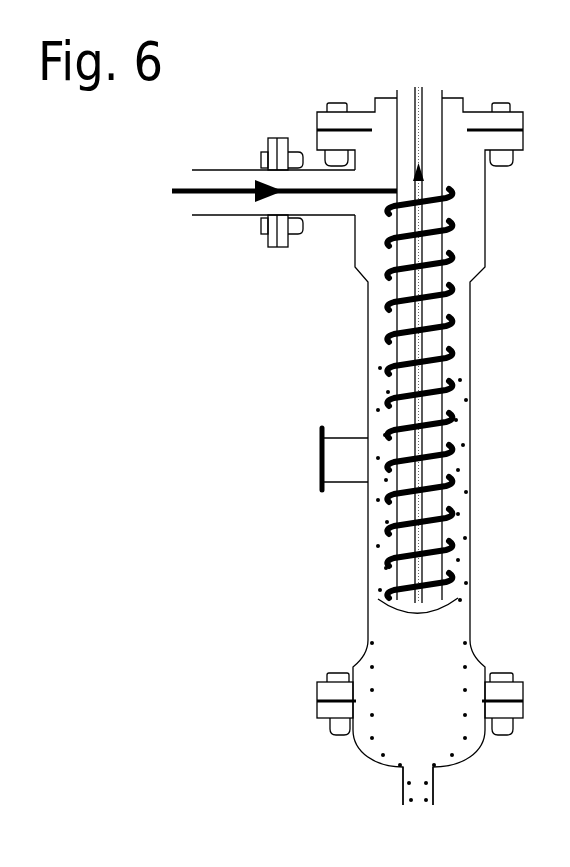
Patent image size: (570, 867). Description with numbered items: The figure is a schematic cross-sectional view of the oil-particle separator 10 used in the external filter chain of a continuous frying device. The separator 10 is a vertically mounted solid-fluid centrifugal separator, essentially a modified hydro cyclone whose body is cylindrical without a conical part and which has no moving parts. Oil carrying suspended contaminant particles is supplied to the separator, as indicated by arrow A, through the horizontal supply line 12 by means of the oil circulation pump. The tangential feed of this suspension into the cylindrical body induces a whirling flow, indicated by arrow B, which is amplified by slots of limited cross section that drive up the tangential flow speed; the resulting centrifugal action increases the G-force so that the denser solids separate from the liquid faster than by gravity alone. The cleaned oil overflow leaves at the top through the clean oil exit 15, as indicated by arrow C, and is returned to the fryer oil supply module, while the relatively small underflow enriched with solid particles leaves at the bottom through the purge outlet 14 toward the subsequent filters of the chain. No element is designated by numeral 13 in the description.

The oil-particle separator 10 is at (188, 299).
The horizontal supply line 12 is at (220, 178).
The reaction column 13 is at (455, 375).
The purge outlet 14 is at (425, 792).
The clean oil exit 15 is at (428, 165).
The arrow indicating oil supply A is at (328, 194).
The arrow indicating whirling flow B is at (452, 446).
The arrow indicating clean oil outflow C is at (421, 117).